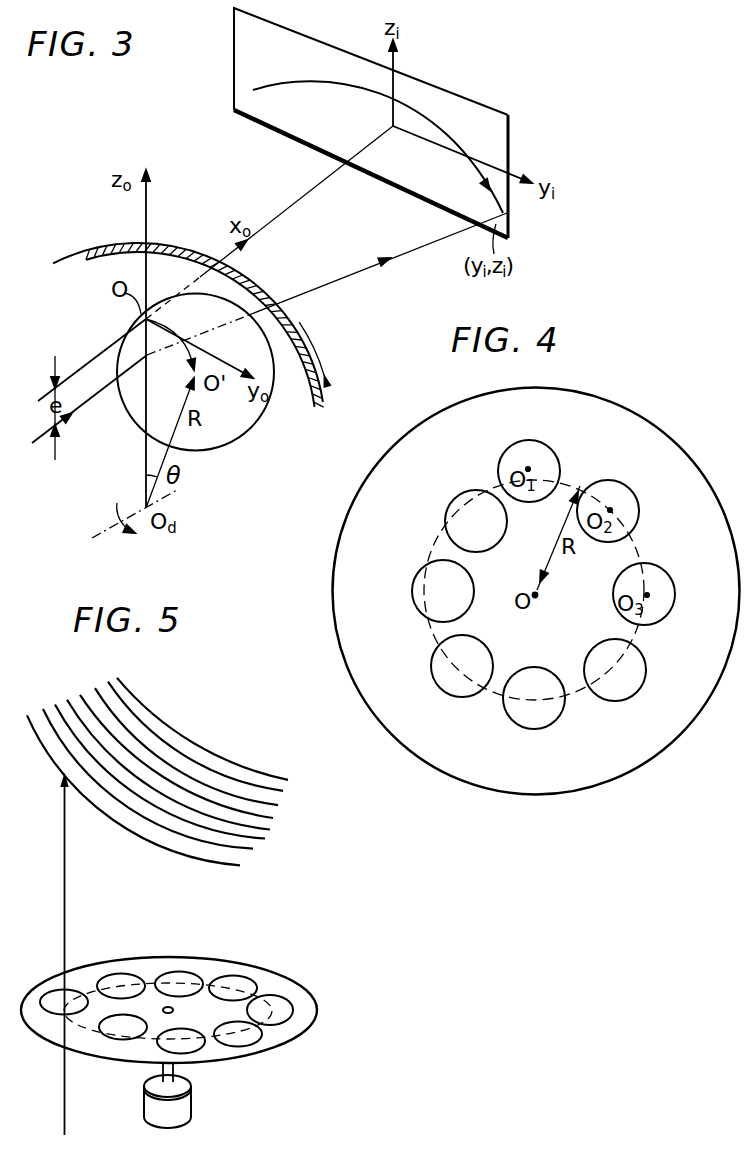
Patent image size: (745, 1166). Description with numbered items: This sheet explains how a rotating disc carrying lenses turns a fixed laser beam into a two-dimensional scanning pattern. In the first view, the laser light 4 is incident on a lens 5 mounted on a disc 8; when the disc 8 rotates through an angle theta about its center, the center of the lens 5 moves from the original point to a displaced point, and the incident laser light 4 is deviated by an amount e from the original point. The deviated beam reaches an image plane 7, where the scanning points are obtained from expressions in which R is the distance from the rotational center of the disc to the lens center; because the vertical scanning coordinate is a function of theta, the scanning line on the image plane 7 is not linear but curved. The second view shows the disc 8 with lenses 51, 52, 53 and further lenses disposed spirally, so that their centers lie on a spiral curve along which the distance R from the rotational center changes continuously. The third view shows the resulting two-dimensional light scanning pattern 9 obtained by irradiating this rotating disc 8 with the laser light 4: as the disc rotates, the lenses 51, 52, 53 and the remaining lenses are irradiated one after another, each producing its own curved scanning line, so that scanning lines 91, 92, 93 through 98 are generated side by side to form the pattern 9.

In FIG. 3, the laser light 4 is at (33, 444).
In FIG. 5, the laser light 4 is at (63, 1117).
In FIG. 3, the lens 5 is at (221, 429).
In FIG. 3, the image plane 7 is at (252, 118).
In FIG. 3, the disc 8 is at (86, 272).
In FIG. 4, the disc 8 is at (337, 579).
In FIG. 5, the disc 8 is at (273, 990).
In FIG. 5, the two-dimensional light scanning pattern 9 is at (192, 790).
In FIG. 4, the lens 51 is at (543, 455).
In FIG. 5, the lens 51 is at (66, 1000).
In FIG. 4, the lens 52 is at (627, 502).
In FIG. 5, the lens 52 is at (115, 977).
In FIG. 4, the lens 53 is at (658, 578).
In FIG. 5, the scanning line 91 is at (240, 865).
In FIG. 5, the scanning line 92 is at (253, 849).
In FIG. 5, the scanning line 93 is at (265, 838).
In FIG. 5, the scanning line 98 is at (227, 756).